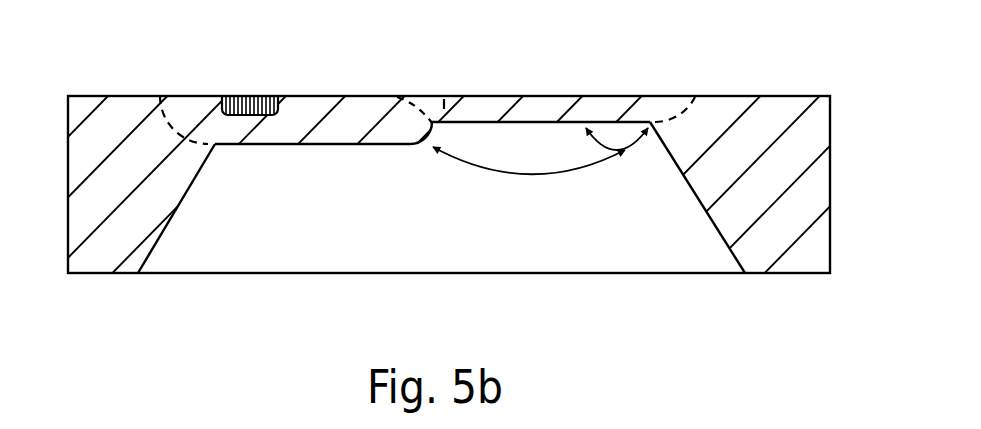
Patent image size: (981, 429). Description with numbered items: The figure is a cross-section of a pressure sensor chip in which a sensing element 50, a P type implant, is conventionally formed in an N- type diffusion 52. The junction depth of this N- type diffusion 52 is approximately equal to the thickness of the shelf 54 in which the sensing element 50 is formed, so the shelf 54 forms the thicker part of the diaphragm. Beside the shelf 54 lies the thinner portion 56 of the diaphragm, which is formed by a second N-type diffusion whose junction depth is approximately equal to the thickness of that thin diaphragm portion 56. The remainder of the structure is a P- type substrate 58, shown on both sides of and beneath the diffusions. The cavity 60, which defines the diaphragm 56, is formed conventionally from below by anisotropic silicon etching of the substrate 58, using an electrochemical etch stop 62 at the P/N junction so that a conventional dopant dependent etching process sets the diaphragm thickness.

The sensing element 50 is at (254, 95).
The N- type diffusion 52 is at (363, 103).
The shelf 54 is at (382, 147).
The thinner portion of the diaphragm 56 is at (603, 108).
The P- type substrate 58 is at (806, 162).
The cavity 60 is at (507, 243).
The electrochemical etch stop 62 is at (628, 153).